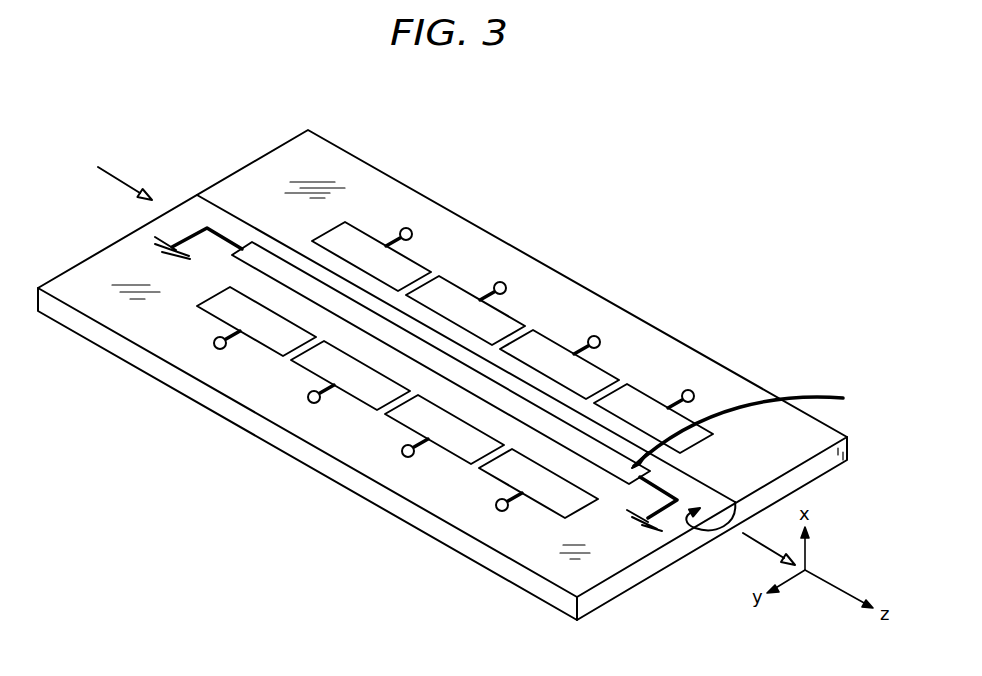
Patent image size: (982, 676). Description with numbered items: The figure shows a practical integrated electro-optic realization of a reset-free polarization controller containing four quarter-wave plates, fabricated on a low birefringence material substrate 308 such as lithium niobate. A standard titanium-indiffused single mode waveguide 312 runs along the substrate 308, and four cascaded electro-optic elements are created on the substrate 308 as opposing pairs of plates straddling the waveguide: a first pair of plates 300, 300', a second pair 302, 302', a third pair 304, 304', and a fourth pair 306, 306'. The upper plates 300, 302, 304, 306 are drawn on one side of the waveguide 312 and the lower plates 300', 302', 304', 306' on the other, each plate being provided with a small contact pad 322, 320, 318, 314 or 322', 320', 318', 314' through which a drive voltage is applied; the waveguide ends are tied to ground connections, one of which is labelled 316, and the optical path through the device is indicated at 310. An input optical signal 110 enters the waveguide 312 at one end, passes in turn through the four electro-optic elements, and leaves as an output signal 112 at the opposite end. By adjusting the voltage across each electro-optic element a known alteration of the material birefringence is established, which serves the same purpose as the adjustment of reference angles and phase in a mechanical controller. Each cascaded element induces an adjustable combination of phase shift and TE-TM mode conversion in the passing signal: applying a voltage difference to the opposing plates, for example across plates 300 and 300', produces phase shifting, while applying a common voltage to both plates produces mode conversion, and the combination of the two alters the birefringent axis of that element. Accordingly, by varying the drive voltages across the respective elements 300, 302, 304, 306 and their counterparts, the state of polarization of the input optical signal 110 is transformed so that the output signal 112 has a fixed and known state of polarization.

The input optical signal 110 is at (123, 171).
The output signal 112 is at (758, 548).
The electro-optic element 300 is at (409, 235).
The electro-optic element 302 is at (516, 293).
The electro-optic element 304 is at (610, 349).
The electro-optic element 306 is at (714, 403).
The low birefringence material substrate 308 is at (547, 592).
The optical signal path 310 is at (693, 527).
The single mode waveguide 312 is at (758, 428).
The fourth contact 314 is at (724, 366).
The ground connection 316 is at (633, 525).
The third contact 318 is at (625, 311).
The second contact 320 is at (527, 255).
The first contact 322 is at (417, 197).
The electro-optic element 300' is at (181, 341).
The electro-optic element 302' is at (305, 416).
The electro-optic element 304' is at (375, 457).
The electro-optic element 306' is at (485, 511).
The fourth lower contact 314' is at (471, 555).
The third lower contact 318' is at (370, 493).
The second lower contact 320' is at (254, 421).
The first lower contact 322' is at (176, 382).